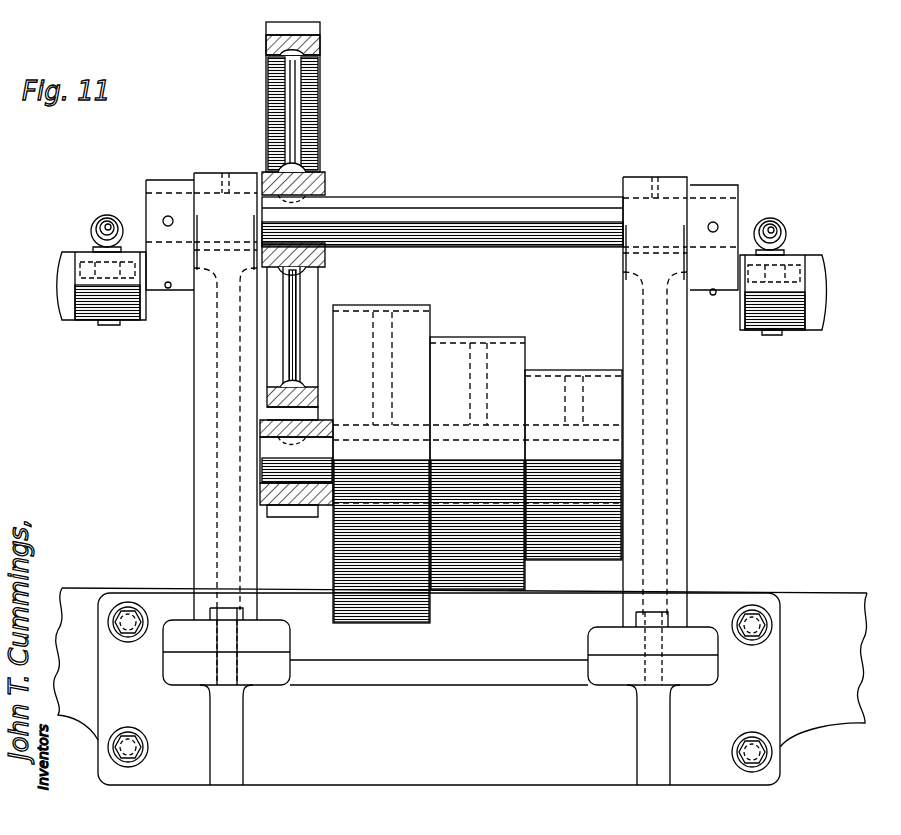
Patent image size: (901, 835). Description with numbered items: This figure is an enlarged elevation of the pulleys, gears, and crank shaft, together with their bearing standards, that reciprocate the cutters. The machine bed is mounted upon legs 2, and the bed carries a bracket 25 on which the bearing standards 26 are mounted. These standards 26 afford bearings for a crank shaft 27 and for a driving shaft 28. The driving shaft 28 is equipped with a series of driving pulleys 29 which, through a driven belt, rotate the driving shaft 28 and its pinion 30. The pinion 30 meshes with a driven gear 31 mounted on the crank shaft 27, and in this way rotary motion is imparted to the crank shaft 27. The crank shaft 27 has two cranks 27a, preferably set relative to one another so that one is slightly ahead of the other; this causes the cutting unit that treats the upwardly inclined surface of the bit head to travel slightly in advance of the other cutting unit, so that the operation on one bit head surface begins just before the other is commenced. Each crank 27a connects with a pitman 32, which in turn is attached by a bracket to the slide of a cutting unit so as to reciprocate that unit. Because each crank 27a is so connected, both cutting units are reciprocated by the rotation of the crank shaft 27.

The legs 2 is at (829, 655).
The bracket 25 is at (446, 732).
The bearing standards 26 is at (200, 556).
The crank shaft 27 is at (396, 200).
The cranks 27a is at (752, 196).
The driving shaft 28 is at (262, 468).
The driving pulleys 29 is at (484, 338).
The pinion 30 is at (272, 512).
The driven gear 31 is at (318, 98).
The pitman 32 is at (82, 250).